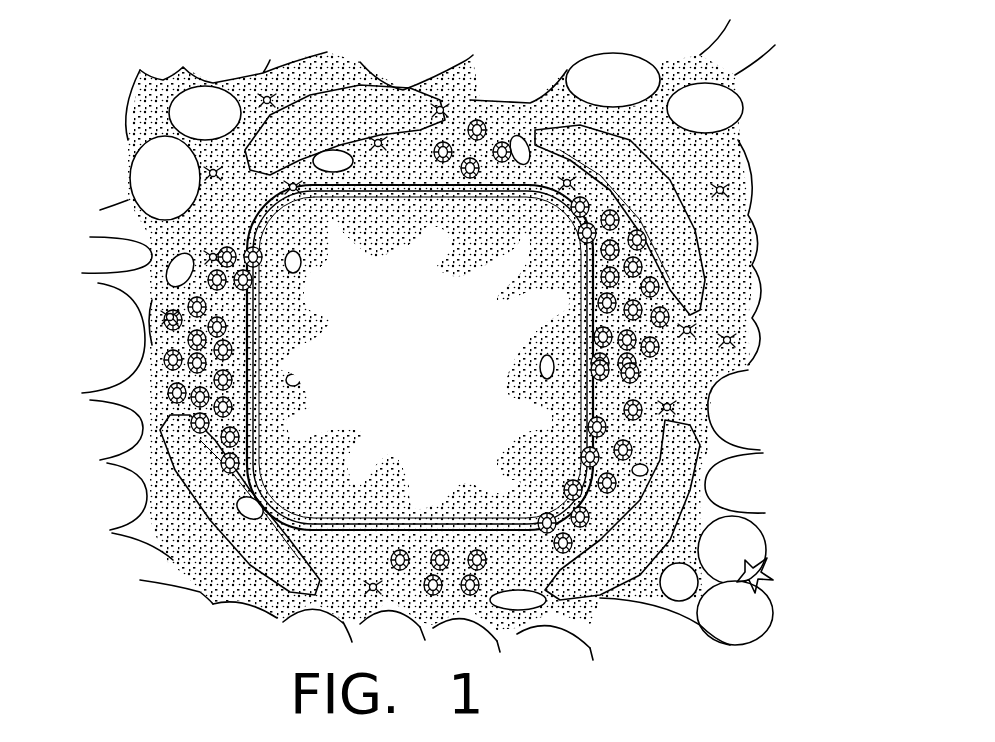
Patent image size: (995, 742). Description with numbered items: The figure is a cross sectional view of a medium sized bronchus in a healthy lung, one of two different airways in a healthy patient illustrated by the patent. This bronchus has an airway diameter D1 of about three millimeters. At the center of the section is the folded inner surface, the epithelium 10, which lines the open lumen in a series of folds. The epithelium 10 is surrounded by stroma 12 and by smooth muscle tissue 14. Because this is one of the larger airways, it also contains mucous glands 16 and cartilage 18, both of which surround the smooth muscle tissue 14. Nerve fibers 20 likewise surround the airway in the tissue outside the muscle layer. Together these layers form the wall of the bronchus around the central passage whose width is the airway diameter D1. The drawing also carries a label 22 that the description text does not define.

The airway 10 is at (245, 195).
The cartilage 12 is at (135, 460).
The epithelium 14 is at (296, 290).
The smooth muscle 16 is at (150, 320).
The mucous glands 18 is at (185, 578).
The stroma 20 is at (162, 358).
The nerve fibers 22 is at (208, 250).
The inner diameter of airway D1 is at (513, 394).